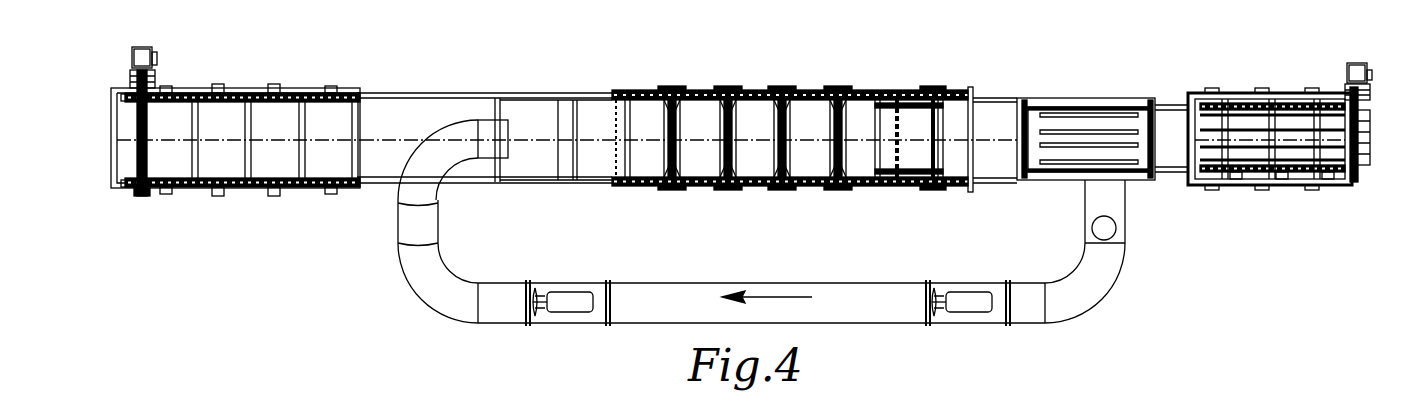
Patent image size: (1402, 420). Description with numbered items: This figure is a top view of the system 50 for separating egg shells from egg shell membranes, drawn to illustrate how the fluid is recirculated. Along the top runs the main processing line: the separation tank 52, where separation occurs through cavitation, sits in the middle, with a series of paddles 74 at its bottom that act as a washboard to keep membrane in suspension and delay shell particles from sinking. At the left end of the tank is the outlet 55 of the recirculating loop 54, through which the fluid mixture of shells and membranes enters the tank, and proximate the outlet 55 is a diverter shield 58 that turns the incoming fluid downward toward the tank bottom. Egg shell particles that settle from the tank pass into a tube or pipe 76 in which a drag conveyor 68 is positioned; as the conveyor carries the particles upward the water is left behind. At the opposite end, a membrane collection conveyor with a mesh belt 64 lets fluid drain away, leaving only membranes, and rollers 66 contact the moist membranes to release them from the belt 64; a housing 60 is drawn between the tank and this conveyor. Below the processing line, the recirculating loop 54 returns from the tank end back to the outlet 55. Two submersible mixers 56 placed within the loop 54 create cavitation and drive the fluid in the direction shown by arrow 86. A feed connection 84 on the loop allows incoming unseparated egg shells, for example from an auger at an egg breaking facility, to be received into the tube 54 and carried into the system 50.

The system 50 is at (1180, 58).
The drag conveyor 68 is at (266, 110).
The tube or pipe 76 is at (418, 95).
The diverter shield 58 is at (564, 108).
The outlet 55 is at (508, 146).
The separation tank 52 is at (596, 106).
The paddles 74 is at (700, 108).
The outlet housing 60 is at (1086, 120).
The mesh belt 64 is at (1248, 115).
The rollers 66 is at (1236, 176).
The recirculating loop 54 is at (436, 296).
The submersible mixers 56 is at (575, 292).
The feed connection 84 is at (1116, 227).
The arrow 86 is at (785, 297).